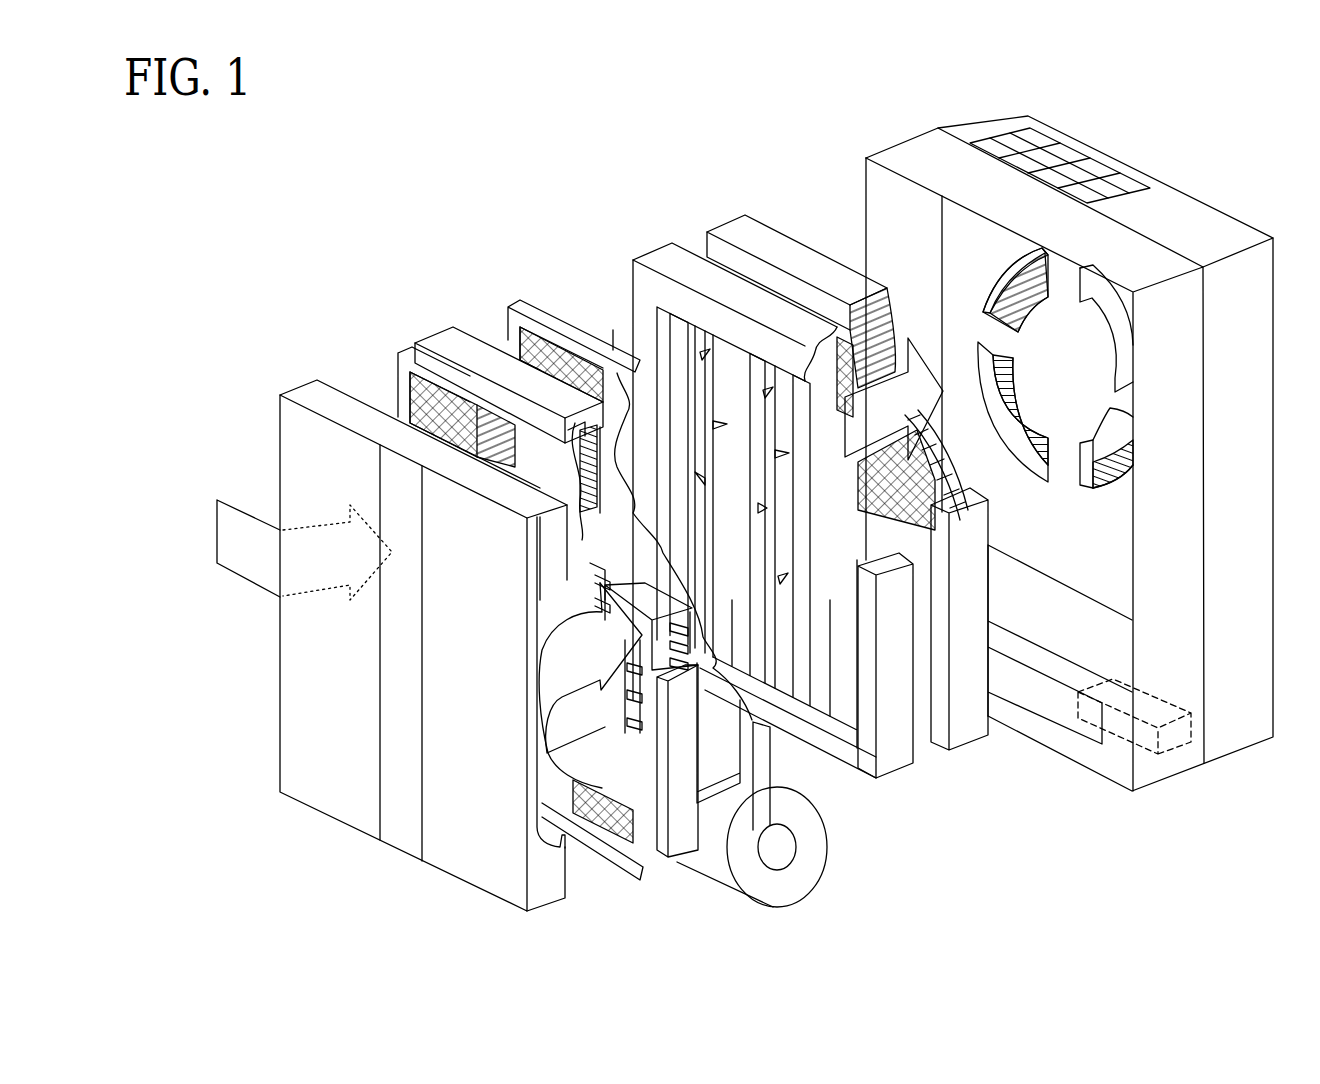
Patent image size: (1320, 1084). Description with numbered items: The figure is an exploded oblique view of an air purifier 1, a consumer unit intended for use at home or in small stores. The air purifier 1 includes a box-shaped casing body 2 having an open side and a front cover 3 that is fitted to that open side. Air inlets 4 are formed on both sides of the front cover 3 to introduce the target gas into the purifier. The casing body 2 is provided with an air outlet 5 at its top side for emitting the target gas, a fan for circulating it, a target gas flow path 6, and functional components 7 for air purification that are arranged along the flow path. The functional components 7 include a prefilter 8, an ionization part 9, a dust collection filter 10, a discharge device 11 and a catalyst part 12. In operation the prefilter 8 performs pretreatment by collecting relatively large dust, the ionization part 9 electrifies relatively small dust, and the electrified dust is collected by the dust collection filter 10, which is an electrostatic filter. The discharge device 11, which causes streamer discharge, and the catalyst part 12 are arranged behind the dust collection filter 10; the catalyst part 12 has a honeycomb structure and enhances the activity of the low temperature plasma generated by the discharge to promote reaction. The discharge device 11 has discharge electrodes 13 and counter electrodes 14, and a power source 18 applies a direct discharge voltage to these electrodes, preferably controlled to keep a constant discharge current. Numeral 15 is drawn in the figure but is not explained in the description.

The air purifier 1 is at (457, 168).
The casing body 2 is at (1230, 214).
The front cover 3 is at (505, 904).
The air inlets 4 is at (565, 849).
The air outlet 5 is at (1070, 155).
The target gas flow path 6 is at (905, 415).
The functional components 7 is at (755, 183).
The prefilter 8 is at (400, 370).
The ionization part 9 is at (433, 330).
The dust collection filter 10 is at (520, 300).
The discharge device 11 is at (638, 237).
The catalyst part 12 is at (723, 227).
The discharge electrodes 13 is at (715, 347).
The counter electrodes 14 is at (747, 373).
The opening 15 is at (643, 312).
The power source 18 is at (1184, 755).